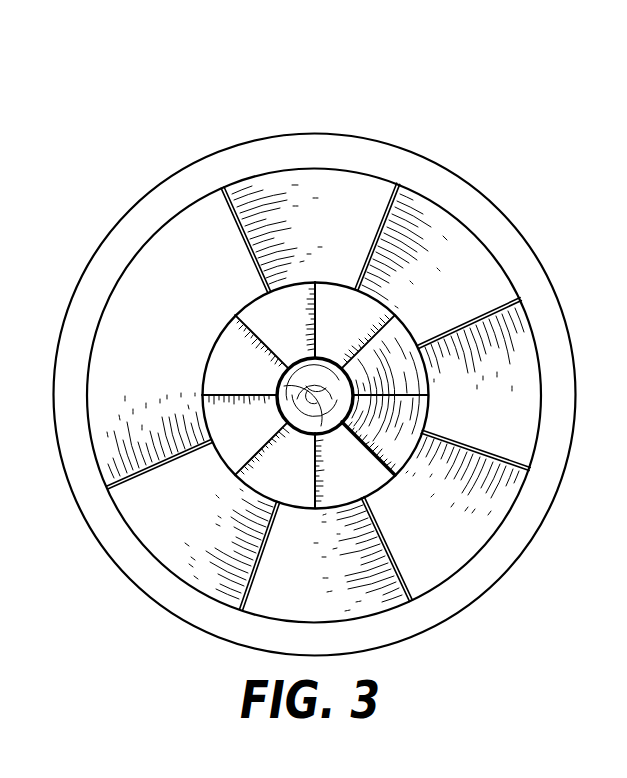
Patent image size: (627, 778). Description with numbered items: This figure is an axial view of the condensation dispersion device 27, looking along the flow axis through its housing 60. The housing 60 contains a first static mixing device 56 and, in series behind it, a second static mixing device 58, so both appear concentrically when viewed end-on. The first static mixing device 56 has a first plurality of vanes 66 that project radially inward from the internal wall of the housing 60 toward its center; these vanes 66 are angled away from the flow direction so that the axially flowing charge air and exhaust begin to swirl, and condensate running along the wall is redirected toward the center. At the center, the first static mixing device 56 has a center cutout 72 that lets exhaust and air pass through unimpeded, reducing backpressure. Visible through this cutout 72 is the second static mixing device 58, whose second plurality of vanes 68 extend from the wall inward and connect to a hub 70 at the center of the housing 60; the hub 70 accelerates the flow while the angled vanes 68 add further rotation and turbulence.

The condensation dispersion device 27 is at (287, 117).
The housing 60 is at (115, 223).
The first static mixing device 56 is at (349, 218).
The first plurality of vanes 66 is at (464, 285).
The second static mixing device 58 is at (297, 338).
The hub 70 is at (318, 388).
The second plurality of vanes 68 is at (408, 364).
The center cutout 72 is at (207, 456).